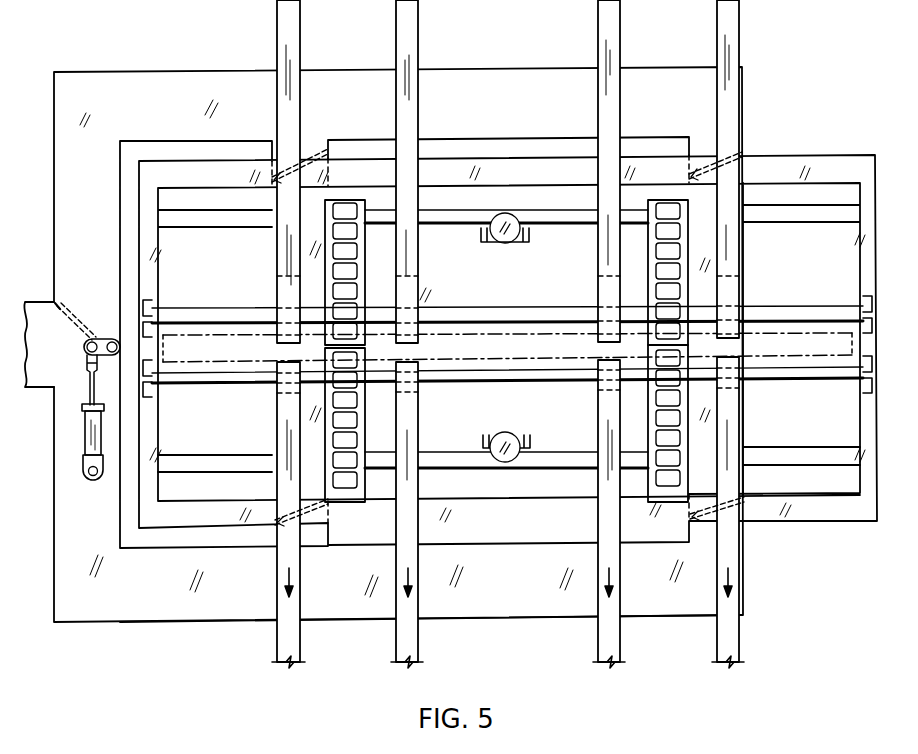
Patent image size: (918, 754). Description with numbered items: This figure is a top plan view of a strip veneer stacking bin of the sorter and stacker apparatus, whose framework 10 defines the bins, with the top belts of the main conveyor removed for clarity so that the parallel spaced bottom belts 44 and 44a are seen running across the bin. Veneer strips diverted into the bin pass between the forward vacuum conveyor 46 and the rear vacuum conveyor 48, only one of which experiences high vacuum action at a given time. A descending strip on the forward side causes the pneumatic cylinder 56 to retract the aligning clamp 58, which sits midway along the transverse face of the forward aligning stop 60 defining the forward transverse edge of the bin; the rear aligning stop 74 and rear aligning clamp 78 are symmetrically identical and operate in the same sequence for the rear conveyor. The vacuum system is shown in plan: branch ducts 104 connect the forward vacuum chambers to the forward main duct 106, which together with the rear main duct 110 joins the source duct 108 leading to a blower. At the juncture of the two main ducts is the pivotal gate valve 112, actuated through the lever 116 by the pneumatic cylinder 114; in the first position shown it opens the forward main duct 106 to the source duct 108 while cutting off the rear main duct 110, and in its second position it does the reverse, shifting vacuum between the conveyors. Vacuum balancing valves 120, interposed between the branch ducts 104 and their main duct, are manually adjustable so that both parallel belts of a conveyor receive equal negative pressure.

The framework 10 is at (797, 155).
The bottom belts 44 is at (277, 17).
The bottom belts 44a is at (300, 640).
The forward vacuum conveyor 46 is at (371, 420).
The rear vacuum conveyor 48 is at (365, 252).
The pneumatic cylinder 56 is at (518, 426).
The aligning clamp 58 is at (491, 436).
The forward aligning stop 60 is at (572, 456).
The rear aligning stop 74 is at (578, 222).
The rear aligning clamp 78 is at (507, 244).
The branch ducts 104 is at (277, 426).
The forward main duct 106 is at (512, 590).
The source duct 108 is at (68, 359).
The rear main duct 110 is at (518, 110).
The pivotal gate valve 112 is at (58, 304).
The pneumatic cylinder 114 is at (105, 455).
The lever 116 is at (113, 338).
The vacuum balancing valves 120 is at (329, 504).